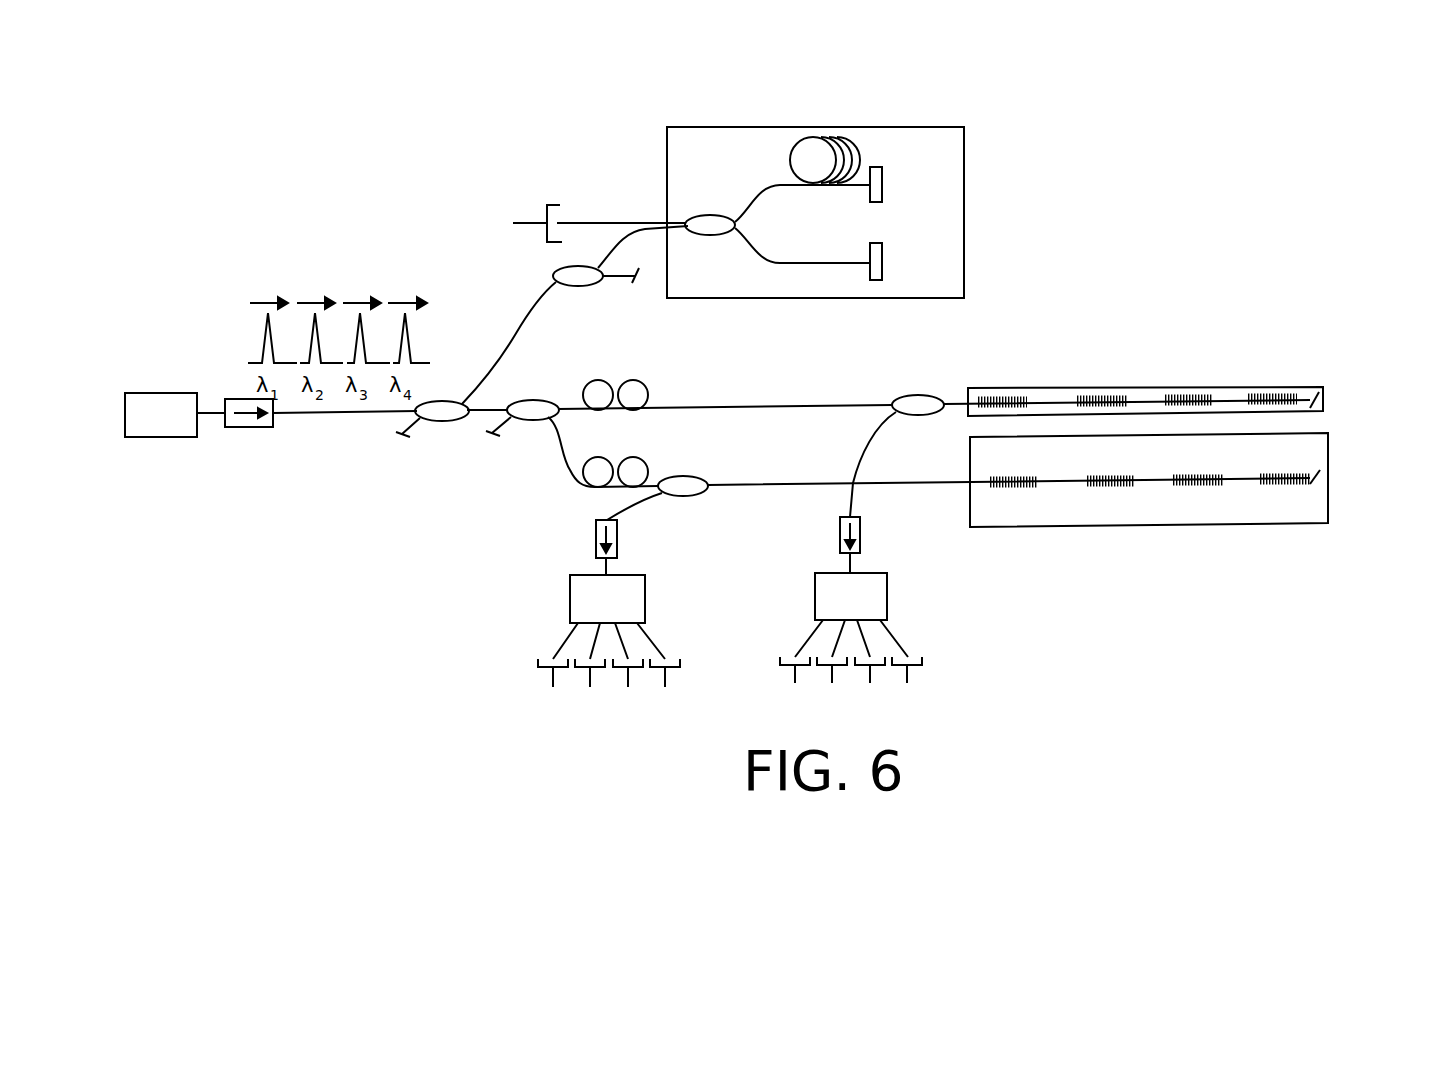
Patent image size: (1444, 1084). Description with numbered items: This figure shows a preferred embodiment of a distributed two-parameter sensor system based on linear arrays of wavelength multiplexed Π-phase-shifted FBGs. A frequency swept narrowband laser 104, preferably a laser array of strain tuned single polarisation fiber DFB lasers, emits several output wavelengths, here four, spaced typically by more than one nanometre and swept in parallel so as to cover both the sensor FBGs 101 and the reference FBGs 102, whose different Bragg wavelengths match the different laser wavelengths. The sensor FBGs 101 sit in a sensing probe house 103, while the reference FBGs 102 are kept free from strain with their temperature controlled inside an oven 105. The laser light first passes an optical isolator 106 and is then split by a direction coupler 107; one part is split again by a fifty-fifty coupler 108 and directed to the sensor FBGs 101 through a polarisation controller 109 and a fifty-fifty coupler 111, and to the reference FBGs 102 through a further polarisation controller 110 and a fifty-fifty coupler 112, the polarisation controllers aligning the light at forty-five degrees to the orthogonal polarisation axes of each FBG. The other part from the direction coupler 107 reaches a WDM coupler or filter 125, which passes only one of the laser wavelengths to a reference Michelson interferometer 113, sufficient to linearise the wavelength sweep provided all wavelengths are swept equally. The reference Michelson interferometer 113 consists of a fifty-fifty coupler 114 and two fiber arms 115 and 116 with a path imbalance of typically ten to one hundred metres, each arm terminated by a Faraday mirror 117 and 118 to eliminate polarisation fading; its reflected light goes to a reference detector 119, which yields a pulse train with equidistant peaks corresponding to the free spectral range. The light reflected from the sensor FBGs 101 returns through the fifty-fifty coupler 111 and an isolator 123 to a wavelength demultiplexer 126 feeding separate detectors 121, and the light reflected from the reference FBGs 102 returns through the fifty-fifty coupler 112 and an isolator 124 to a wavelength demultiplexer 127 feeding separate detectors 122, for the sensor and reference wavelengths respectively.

The Π-phase-shifted FBG 101 is at (1215, 362).
The reference FBG 102 is at (1302, 523).
The sensing probe house 103 is at (1310, 387).
The frequency swept narrowband laser 104 is at (161, 415).
The oven 105 is at (988, 527).
The optical isolator 106 is at (252, 428).
The direction coupler 107 is at (437, 422).
The 50/50 coupler 108 is at (528, 421).
The polarisation controller 109 is at (662, 361).
The fiber delay loop 110 is at (647, 457).
The 50/50 coupler 111 is at (915, 394).
The 50/50 coupler 112 is at (690, 497).
The reference Michelson interferometer 113 is at (965, 130).
The 50/50 coupler 114 is at (710, 236).
The fiber arm 115 is at (765, 191).
The fiber arm 116 is at (760, 250).
The Faraday mirror 117 is at (867, 205).
The Faraday mirror 118 is at (884, 260).
The reference detector 119 is at (558, 205).
The detector 121 is at (925, 665).
The detector 122 is at (537, 667).
The isolator 123 is at (840, 548).
The isolator 124 is at (596, 551).
The WDM coupler or filter 125 is at (580, 287).
The wavelength demultiplexer 126 is at (815, 605).
The wavelength demultiplexer 127 is at (570, 606).